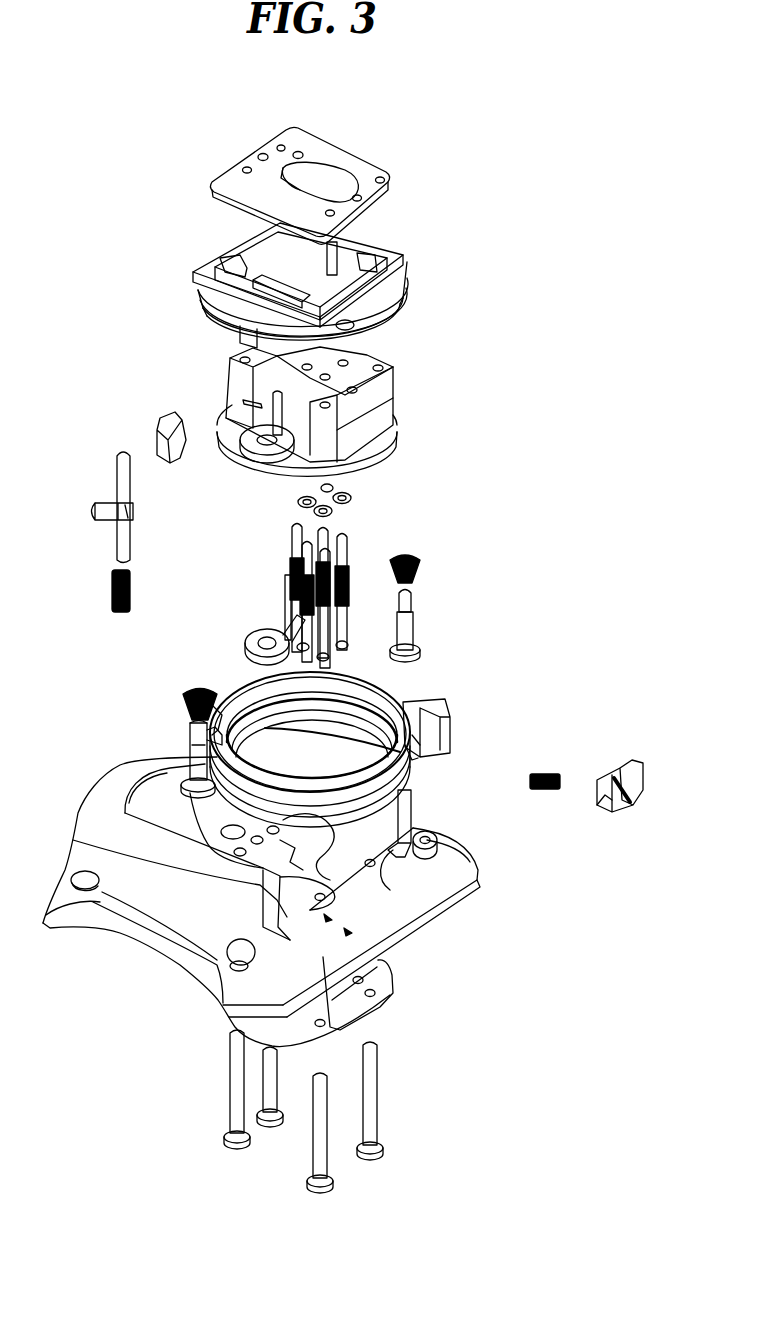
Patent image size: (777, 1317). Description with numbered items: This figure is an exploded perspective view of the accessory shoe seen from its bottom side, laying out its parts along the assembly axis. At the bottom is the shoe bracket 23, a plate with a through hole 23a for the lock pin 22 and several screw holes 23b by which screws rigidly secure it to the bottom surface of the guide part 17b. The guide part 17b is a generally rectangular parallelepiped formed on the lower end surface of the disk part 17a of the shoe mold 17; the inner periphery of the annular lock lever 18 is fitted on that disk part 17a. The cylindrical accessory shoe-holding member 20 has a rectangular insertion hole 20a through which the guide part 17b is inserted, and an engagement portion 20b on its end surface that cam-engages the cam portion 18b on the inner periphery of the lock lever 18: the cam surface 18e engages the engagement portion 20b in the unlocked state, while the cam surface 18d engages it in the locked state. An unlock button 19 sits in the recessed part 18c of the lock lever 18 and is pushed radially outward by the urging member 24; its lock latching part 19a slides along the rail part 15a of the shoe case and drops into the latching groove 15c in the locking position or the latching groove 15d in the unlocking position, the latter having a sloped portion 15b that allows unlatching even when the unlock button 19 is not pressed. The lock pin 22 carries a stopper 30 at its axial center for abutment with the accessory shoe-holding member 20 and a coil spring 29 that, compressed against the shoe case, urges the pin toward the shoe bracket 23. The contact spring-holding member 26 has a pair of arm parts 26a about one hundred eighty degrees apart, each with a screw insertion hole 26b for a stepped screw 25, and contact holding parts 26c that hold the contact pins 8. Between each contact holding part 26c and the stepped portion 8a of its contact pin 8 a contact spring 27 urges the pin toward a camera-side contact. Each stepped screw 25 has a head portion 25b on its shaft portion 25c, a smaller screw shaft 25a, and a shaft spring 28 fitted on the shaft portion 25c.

The contact pin 8 is at (340, 530).
The stepped portion 8a is at (347, 560).
The rail part 15a is at (380, 933).
The sloped portion 15b is at (410, 887).
The latching groove 15c is at (227, 703).
The latching groove 15d is at (427, 833).
The shoe mold 17 is at (226, 413).
The disk part 17a is at (383, 463).
The guide part 17b is at (365, 410).
The lock lever 18 is at (390, 693).
The cam portion 18b is at (387, 803).
The recessed part 18c is at (430, 757).
The cam surface 18d is at (190, 715).
The cam surface 18e is at (407, 773).
The unlock button 19 is at (630, 767).
The lock latching part 19a is at (617, 812).
The accessory shoe-holding member 20 is at (407, 287).
The insertion hole 20a is at (287, 247).
The engagement portion 20b is at (327, 347).
The lock pin 22 is at (122, 540).
The shoe bracket 23 is at (346, 150).
The through hole 23a is at (257, 155).
The screw holes 23b is at (387, 178).
The urging member 24 is at (537, 770).
The stepped screw 25 is at (197, 770).
The screw shaft 25a is at (411, 605).
The head portion 25b is at (418, 655).
The shaft portion 25c is at (413, 630).
The contact spring-holding member 26 is at (287, 623).
The arm parts 26a is at (257, 660).
The screw insertion hole 26b is at (260, 640).
The contact holding parts 26c is at (287, 587).
The contact spring 27 is at (283, 560).
The shaft spring 28 is at (415, 565).
The coil spring 29 is at (112, 598).
The stopper 30 is at (100, 507).